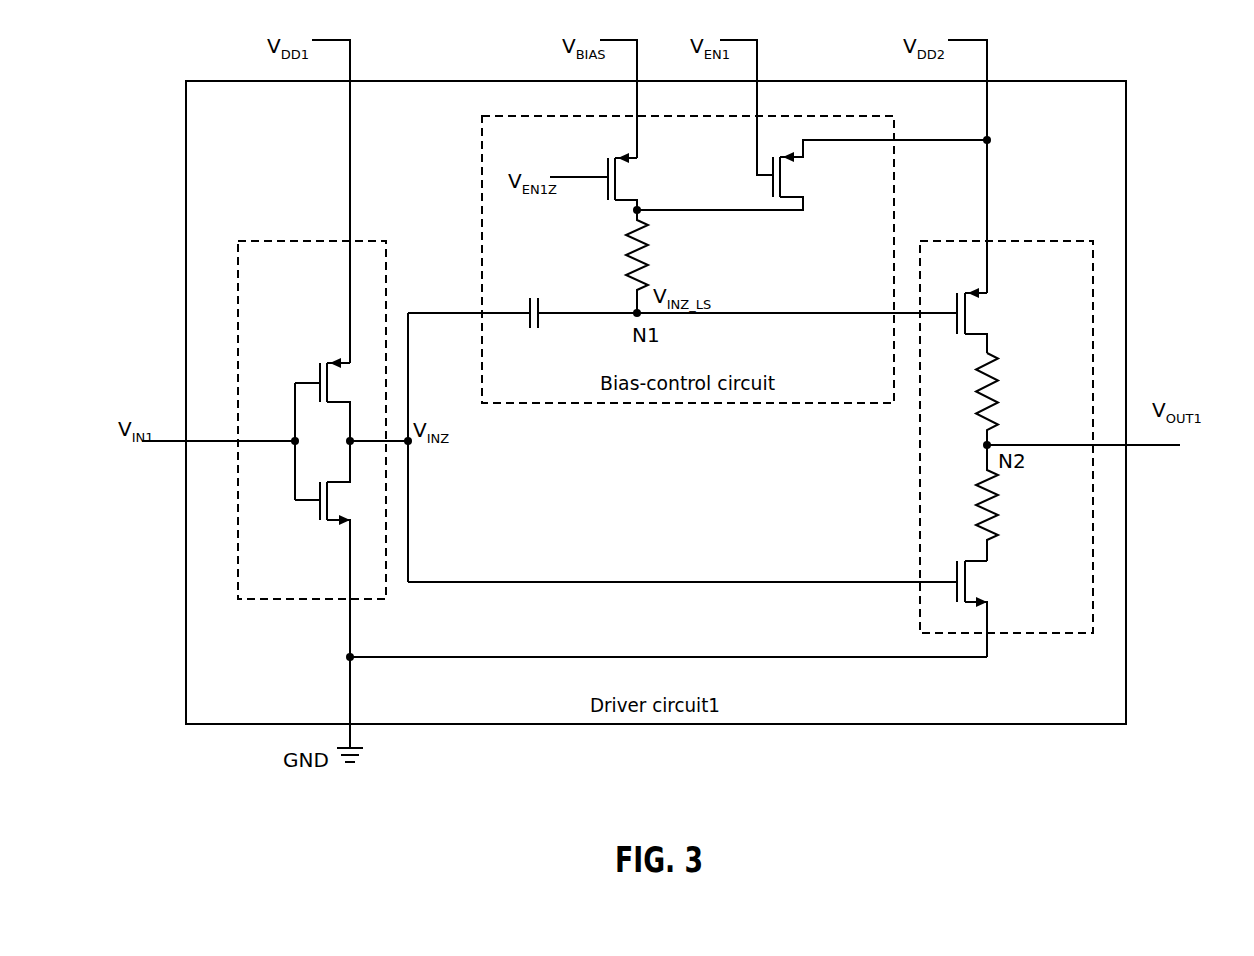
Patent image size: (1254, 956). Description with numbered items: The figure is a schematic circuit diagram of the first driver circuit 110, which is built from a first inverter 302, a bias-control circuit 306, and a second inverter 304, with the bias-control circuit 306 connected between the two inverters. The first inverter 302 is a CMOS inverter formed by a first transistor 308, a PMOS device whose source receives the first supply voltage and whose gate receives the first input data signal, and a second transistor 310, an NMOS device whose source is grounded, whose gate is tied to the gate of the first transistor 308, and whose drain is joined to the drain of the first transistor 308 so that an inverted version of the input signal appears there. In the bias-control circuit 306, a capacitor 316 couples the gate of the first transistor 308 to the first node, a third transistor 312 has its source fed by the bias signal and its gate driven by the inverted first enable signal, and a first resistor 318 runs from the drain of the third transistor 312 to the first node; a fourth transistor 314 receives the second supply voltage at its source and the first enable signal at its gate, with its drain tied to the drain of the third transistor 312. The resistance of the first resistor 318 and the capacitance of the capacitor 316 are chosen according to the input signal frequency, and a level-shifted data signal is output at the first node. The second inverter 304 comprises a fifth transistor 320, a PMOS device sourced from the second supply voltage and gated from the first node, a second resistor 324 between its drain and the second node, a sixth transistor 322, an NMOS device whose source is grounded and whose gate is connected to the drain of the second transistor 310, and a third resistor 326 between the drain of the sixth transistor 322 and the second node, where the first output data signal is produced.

The first driver circuit 110 is at (1028, 81).
The first inverter 302 is at (372, 241).
The second inverter 304 is at (1038, 241).
The bias-control circuit 306 is at (894, 133).
The first transistor 308 is at (333, 397).
The second transistor 310 is at (333, 510).
The third transistor 312 is at (620, 185).
The fourth transistor 314 is at (785, 185).
The capacitor 316 is at (540, 310).
The first resistor 318 is at (665, 229).
The fifth transistor 320 is at (970, 323).
The sixth transistor 322 is at (970, 591).
The second resistor 324 is at (994, 400).
The third resistor 326 is at (994, 512).